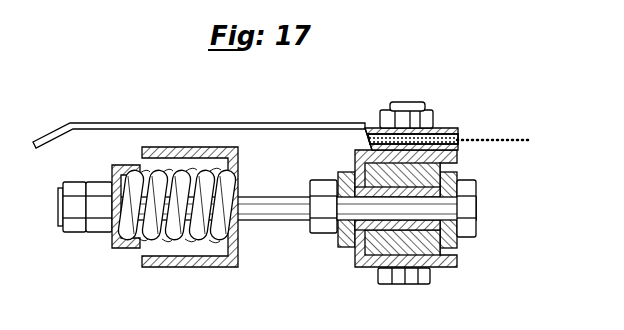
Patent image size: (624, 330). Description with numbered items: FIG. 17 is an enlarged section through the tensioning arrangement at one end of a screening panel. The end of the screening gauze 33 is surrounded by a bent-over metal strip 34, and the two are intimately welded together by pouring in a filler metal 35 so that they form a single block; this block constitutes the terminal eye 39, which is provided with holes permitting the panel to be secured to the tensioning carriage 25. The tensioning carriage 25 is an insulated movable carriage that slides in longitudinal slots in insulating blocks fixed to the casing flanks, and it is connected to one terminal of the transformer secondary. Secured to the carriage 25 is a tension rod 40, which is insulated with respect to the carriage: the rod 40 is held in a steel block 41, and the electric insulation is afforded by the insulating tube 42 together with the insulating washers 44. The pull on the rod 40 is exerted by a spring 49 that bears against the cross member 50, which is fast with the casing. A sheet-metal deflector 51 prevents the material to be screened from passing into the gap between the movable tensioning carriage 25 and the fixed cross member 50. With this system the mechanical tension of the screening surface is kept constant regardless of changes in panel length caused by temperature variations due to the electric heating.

The tensioning carriage 25 is at (448, 268).
The screening gauze 33 is at (499, 139).
The bent-over metal strip 34 is at (440, 135).
The filler metal 35 is at (458, 140).
The terminal eye 39 is at (370, 137).
The tension rod 40 is at (275, 220).
The steel block 41 is at (415, 172).
The insulating tube 42 is at (410, 230).
The insulating washer 44 is at (342, 247).
The spring 49 is at (152, 228).
The cross member 50 is at (203, 268).
The sheet-metal deflector 51 is at (103, 122).